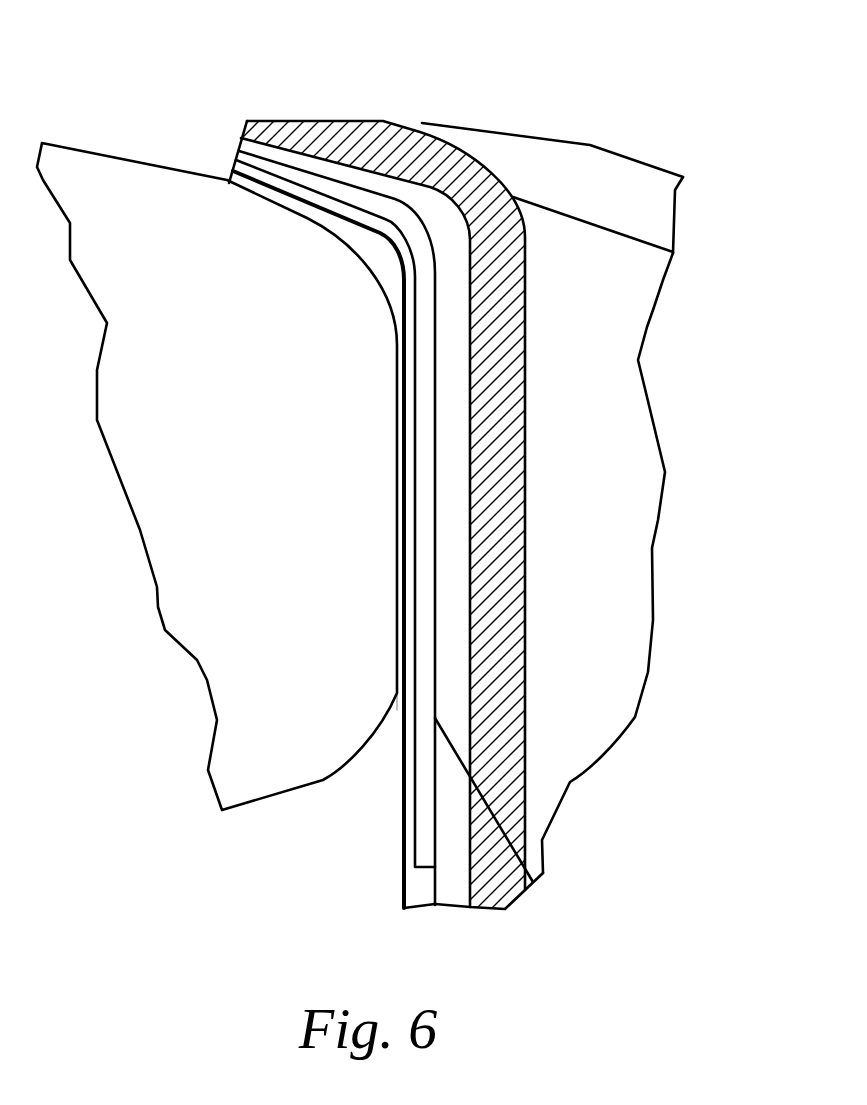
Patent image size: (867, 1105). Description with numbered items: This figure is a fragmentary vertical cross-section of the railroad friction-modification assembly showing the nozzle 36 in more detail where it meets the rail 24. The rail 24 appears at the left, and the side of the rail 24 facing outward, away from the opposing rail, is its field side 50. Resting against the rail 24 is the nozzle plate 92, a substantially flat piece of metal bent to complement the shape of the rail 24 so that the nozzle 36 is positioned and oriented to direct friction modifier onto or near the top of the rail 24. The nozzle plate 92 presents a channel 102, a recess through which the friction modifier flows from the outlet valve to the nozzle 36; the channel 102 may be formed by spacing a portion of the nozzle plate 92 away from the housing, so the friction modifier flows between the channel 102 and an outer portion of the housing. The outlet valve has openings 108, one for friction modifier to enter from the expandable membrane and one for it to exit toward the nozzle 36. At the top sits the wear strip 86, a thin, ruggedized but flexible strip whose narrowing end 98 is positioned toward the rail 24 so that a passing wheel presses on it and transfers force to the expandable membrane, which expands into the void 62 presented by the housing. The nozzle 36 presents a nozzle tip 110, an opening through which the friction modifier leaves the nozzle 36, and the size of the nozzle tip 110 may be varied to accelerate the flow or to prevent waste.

The rail 24 is at (177, 548).
The nozzle 36 is at (140, 72).
The field side 50 is at (360, 803).
The void 62 is at (607, 323).
The wear strip 86 is at (653, 202).
The nozzle plate 92 is at (413, 887).
The narrowing end 98 is at (533, 160).
The channel 102 is at (309, 185).
The openings 108 is at (435, 212).
The nozzle tip 110 is at (208, 136).